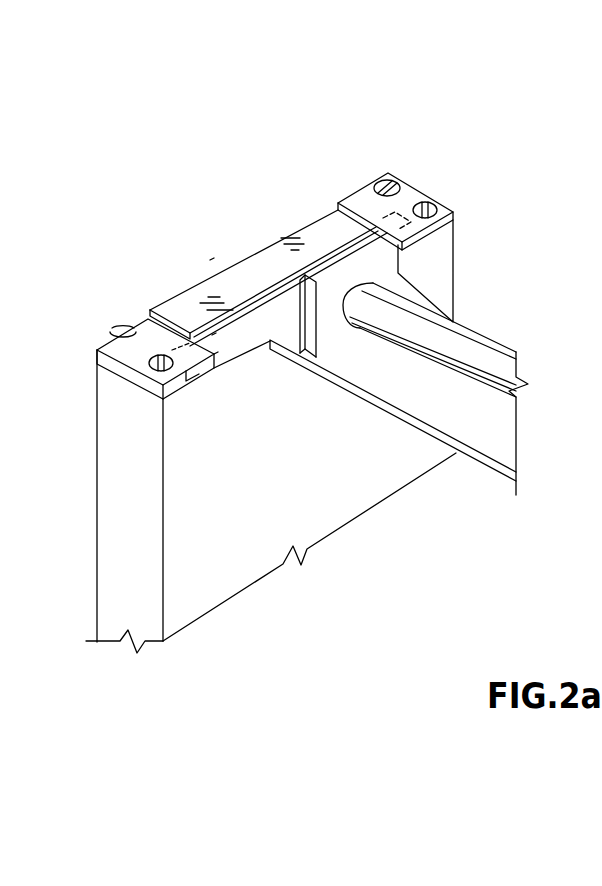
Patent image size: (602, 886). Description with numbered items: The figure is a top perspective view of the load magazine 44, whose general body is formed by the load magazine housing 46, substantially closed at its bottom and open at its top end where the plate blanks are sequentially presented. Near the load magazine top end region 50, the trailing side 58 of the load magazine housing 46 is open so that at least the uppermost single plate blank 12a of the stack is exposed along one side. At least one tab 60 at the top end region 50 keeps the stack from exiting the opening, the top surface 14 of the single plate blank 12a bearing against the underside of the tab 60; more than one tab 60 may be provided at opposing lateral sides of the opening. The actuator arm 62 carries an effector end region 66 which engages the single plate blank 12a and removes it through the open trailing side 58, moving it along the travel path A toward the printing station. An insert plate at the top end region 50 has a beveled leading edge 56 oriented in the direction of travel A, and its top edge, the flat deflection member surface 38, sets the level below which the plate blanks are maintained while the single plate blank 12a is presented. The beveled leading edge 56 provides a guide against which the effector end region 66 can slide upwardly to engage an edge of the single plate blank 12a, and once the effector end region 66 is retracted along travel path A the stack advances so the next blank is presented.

The single plate blank 12a is at (276, 253).
The top surface 14 is at (341, 219).
The flat deflection member surface 38 is at (221, 333).
The load magazine 44 is at (248, 550).
The load magazine housing 46 is at (432, 462).
The load magazine top end region 50 is at (485, 202).
The beveled leading edge 56 is at (218, 356).
The trailing side 58 is at (205, 238).
The tab 60 is at (137, 327).
The actuator arm 62 is at (480, 360).
The effector end region 66 is at (388, 277).
The travel path A is at (226, 344).